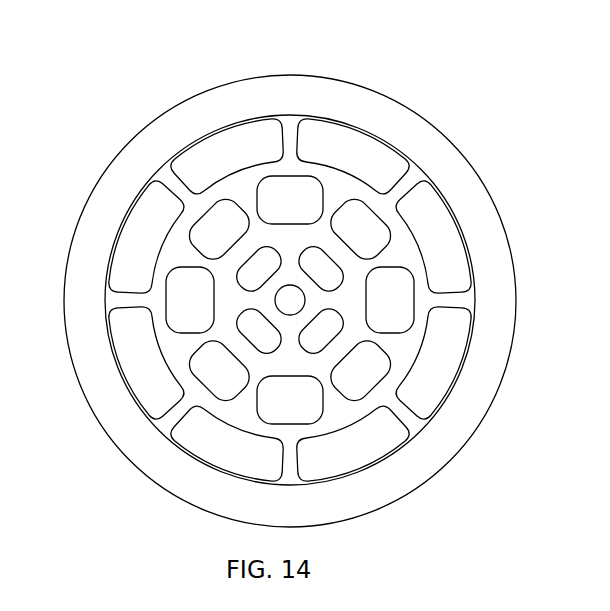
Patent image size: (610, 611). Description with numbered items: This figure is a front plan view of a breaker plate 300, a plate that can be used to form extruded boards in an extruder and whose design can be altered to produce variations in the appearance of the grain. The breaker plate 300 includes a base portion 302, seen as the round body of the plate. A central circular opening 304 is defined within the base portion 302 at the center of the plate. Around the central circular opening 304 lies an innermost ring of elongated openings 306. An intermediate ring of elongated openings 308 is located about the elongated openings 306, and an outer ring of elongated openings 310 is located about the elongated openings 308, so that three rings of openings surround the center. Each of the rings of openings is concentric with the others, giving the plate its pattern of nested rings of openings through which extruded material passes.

The breaker plate 300 is at (128, 112).
The base portion 302 is at (510, 360).
The central circular opening 304 is at (297, 295).
The innermost ring of elongated openings 306 is at (318, 253).
The intermediate ring of elongated openings 308 is at (190, 228).
The outer ring of elongated openings 310 is at (233, 130).